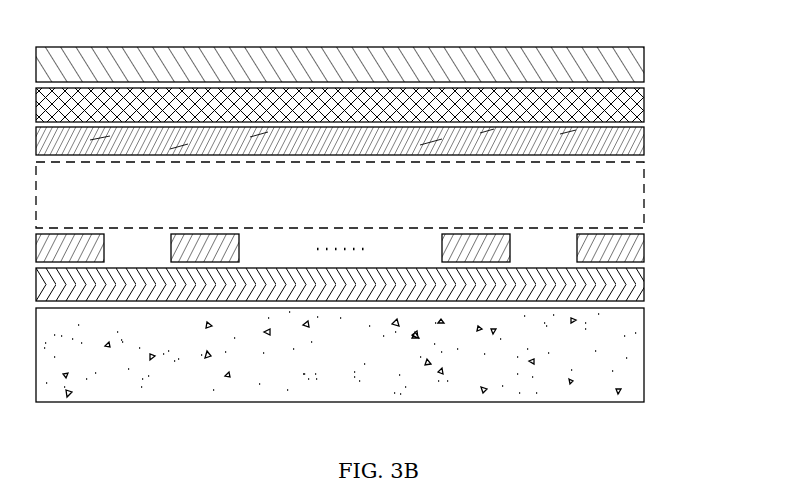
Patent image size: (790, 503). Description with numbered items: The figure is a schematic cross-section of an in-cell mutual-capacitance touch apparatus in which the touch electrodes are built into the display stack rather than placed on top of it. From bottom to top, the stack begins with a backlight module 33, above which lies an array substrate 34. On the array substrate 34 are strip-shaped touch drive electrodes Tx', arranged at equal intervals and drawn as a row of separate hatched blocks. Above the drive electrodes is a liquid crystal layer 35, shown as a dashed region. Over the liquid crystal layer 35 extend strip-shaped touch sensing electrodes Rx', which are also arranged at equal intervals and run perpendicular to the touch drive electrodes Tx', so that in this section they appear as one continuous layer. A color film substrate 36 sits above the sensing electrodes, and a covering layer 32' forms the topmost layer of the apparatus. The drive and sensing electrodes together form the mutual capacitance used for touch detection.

The covering layer 32' is at (372, 63).
The color film substrate 36 is at (636, 105).
The touch sensing electrodes Rx' is at (372, 139).
The liquid crystal layer 35 is at (632, 204).
The touch drive electrodes Tx' is at (371, 242).
The array substrate 34 is at (640, 282).
The backlight module 33 is at (637, 367).